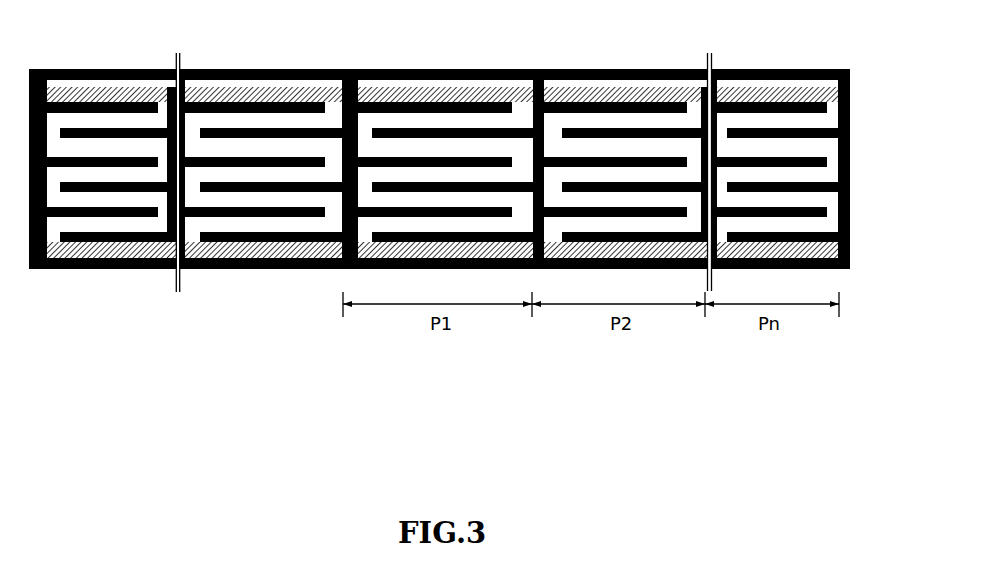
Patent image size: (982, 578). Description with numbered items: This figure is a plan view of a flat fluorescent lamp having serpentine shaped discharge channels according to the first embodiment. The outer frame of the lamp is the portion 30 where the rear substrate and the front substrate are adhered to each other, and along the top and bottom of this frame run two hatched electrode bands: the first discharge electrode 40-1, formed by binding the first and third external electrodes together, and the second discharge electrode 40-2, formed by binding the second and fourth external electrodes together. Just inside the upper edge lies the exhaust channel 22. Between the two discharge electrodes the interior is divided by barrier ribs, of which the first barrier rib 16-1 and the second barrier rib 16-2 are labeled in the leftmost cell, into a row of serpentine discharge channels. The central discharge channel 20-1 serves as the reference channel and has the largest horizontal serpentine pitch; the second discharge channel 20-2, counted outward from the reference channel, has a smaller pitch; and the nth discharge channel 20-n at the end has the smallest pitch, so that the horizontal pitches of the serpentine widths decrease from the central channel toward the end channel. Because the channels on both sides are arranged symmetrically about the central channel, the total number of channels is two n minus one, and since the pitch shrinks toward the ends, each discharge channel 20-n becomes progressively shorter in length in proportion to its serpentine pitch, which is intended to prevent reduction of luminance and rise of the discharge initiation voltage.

The first barrier rib 16-1 is at (172, 123).
The second barrier rib 16-2 is at (77, 131).
The exhaust channel 22 is at (282, 83).
The central discharge channel 20-1 is at (413, 117).
The second discharge channel 20-2 is at (595, 117).
The nth discharge channel 20-n is at (768, 117).
The first discharge electrode 40-1 is at (852, 93).
The second discharge electrode 40-2 is at (852, 248).
The adhered portion of rear and front substrates 30 is at (122, 268).